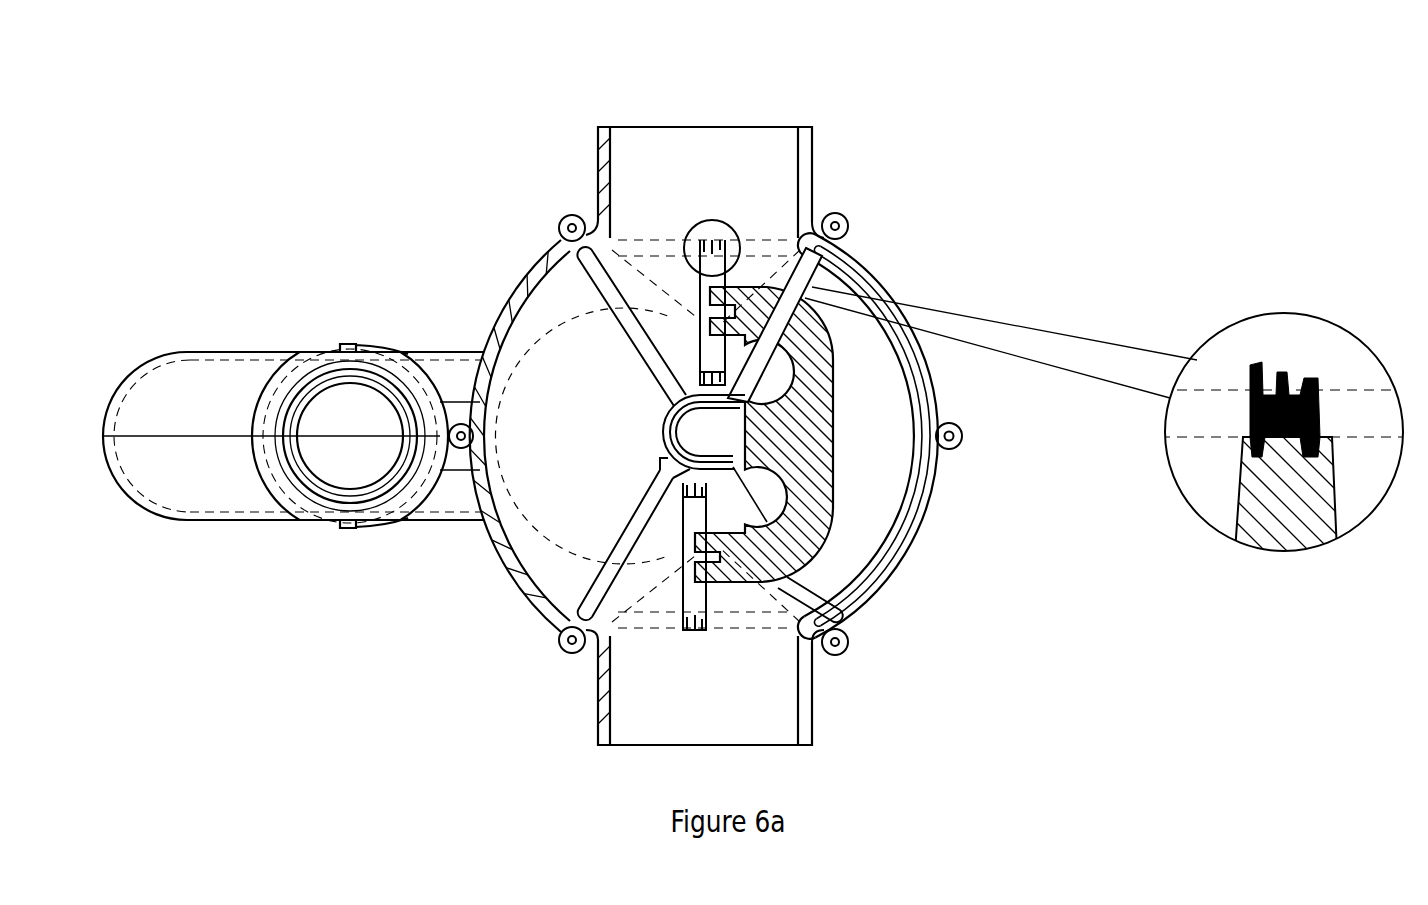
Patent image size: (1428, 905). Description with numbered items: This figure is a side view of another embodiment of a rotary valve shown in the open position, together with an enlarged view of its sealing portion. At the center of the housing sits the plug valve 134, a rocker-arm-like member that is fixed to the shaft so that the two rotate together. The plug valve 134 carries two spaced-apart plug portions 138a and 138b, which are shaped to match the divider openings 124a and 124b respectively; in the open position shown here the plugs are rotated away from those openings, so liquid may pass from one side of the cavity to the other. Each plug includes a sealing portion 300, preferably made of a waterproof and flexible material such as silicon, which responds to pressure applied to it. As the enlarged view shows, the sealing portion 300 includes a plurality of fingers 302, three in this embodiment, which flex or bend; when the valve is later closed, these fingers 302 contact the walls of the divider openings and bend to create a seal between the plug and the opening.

The divider opening 124a is at (800, 285).
The divider opening 124b is at (660, 495).
The plug portion 138a is at (712, 357).
The plug portion 138b is at (697, 515).
The plug valve 134 is at (807, 500).
The sealing portion 300 is at (1107, 374).
The fingers 302 is at (1250, 407).